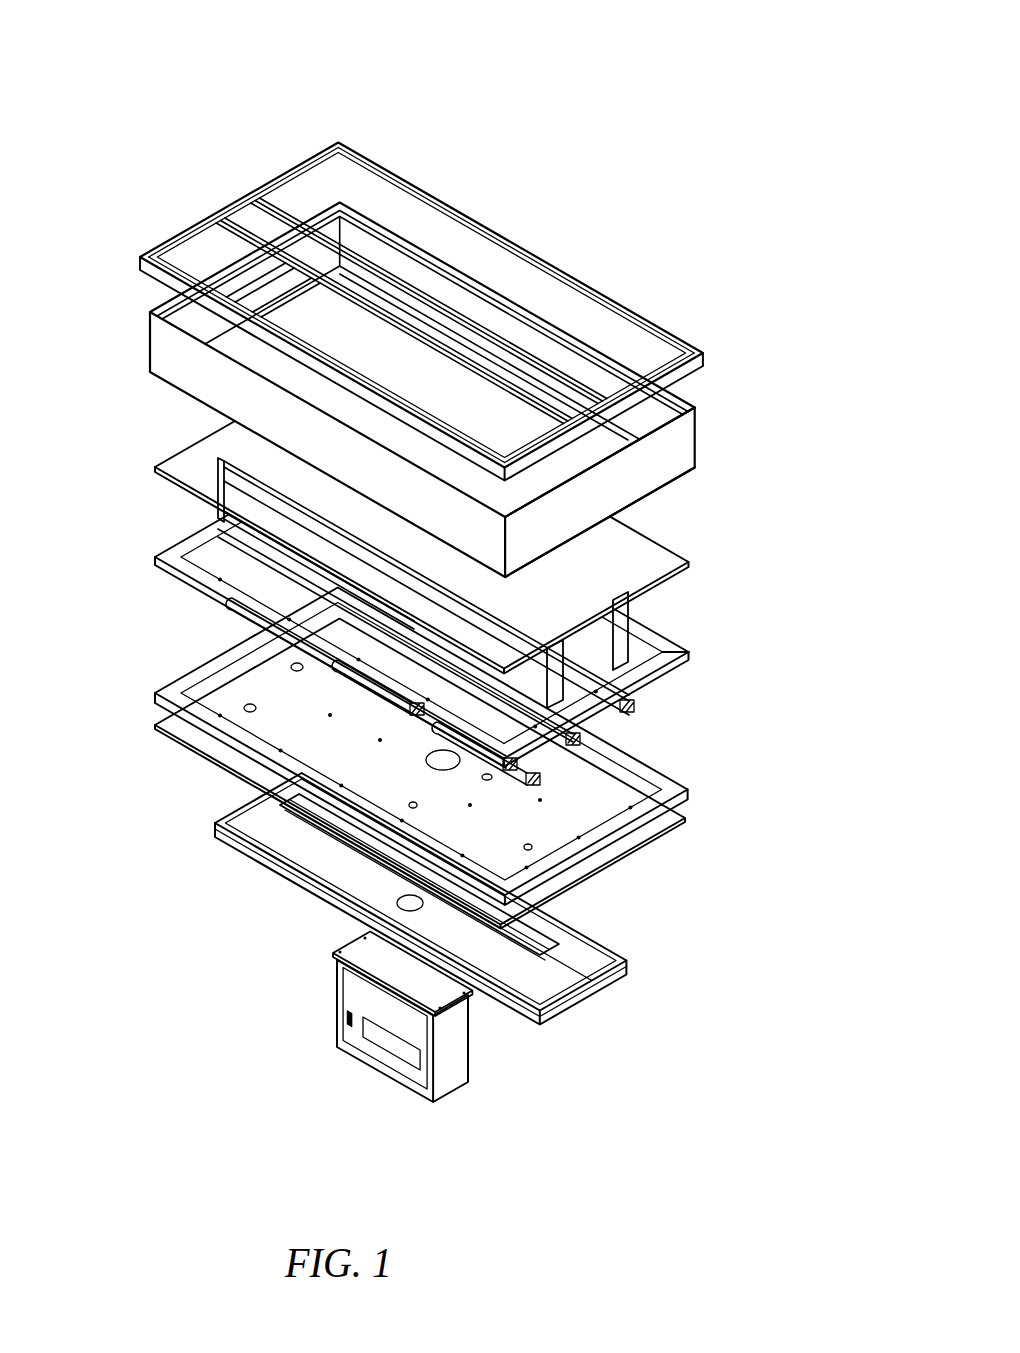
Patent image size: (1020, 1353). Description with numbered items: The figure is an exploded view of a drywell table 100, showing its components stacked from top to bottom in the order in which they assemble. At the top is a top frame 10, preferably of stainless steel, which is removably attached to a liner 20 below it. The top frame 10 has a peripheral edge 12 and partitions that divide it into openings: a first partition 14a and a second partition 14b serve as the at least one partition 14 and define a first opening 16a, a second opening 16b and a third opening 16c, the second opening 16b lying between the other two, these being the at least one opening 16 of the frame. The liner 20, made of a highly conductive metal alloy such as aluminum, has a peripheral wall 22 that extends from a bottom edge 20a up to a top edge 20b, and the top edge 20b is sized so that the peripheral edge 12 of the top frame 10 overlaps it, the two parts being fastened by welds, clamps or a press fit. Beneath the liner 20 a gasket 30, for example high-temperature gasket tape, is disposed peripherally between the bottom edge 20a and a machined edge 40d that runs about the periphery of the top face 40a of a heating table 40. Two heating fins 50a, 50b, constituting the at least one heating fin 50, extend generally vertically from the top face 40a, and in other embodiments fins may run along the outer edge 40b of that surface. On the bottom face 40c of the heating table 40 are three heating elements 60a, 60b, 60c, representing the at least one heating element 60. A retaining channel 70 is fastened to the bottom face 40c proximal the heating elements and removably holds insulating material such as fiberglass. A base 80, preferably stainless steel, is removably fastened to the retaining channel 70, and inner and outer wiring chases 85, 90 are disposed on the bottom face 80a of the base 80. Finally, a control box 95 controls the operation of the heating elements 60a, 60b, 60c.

The drywell table 100 is at (626, 88).
The top frame 10 is at (445, 143).
The peripheral edge 12 is at (457, 207).
The partition 14 is at (258, 138).
The first partition 14a is at (275, 180).
The second partition 14b is at (243, 220).
The opening 16 is at (627, 347).
The first opening 16a is at (420, 170).
The second opening 16b is at (262, 203).
The third opening 16c is at (190, 262).
The liner 20 is at (722, 445).
The bottom edge 20a is at (688, 487).
The top edge 20b is at (697, 398).
The peripheral wall 22 is at (467, 273).
The gasket 30 is at (185, 472).
The heating table 40 is at (177, 553).
The top face 40a is at (690, 650).
The outer edge 40b is at (640, 622).
The bottom face 40c is at (688, 667).
The machined edge 40d is at (687, 640).
The heating fin 50 is at (614, 575).
The heating fin 50a is at (637, 650).
The heating fin 50b is at (225, 465).
The heating element 60 is at (657, 728).
The heating element 60a is at (470, 768).
The heating element 60b is at (345, 692).
The heating element 60c is at (222, 622).
The retaining channel 70 is at (215, 655).
The base 80 is at (195, 748).
The bottom face 80a is at (655, 850).
The inner wiring chase 85 is at (310, 837).
The outer wiring chase 90 is at (320, 890).
The control box 95 is at (337, 1003).